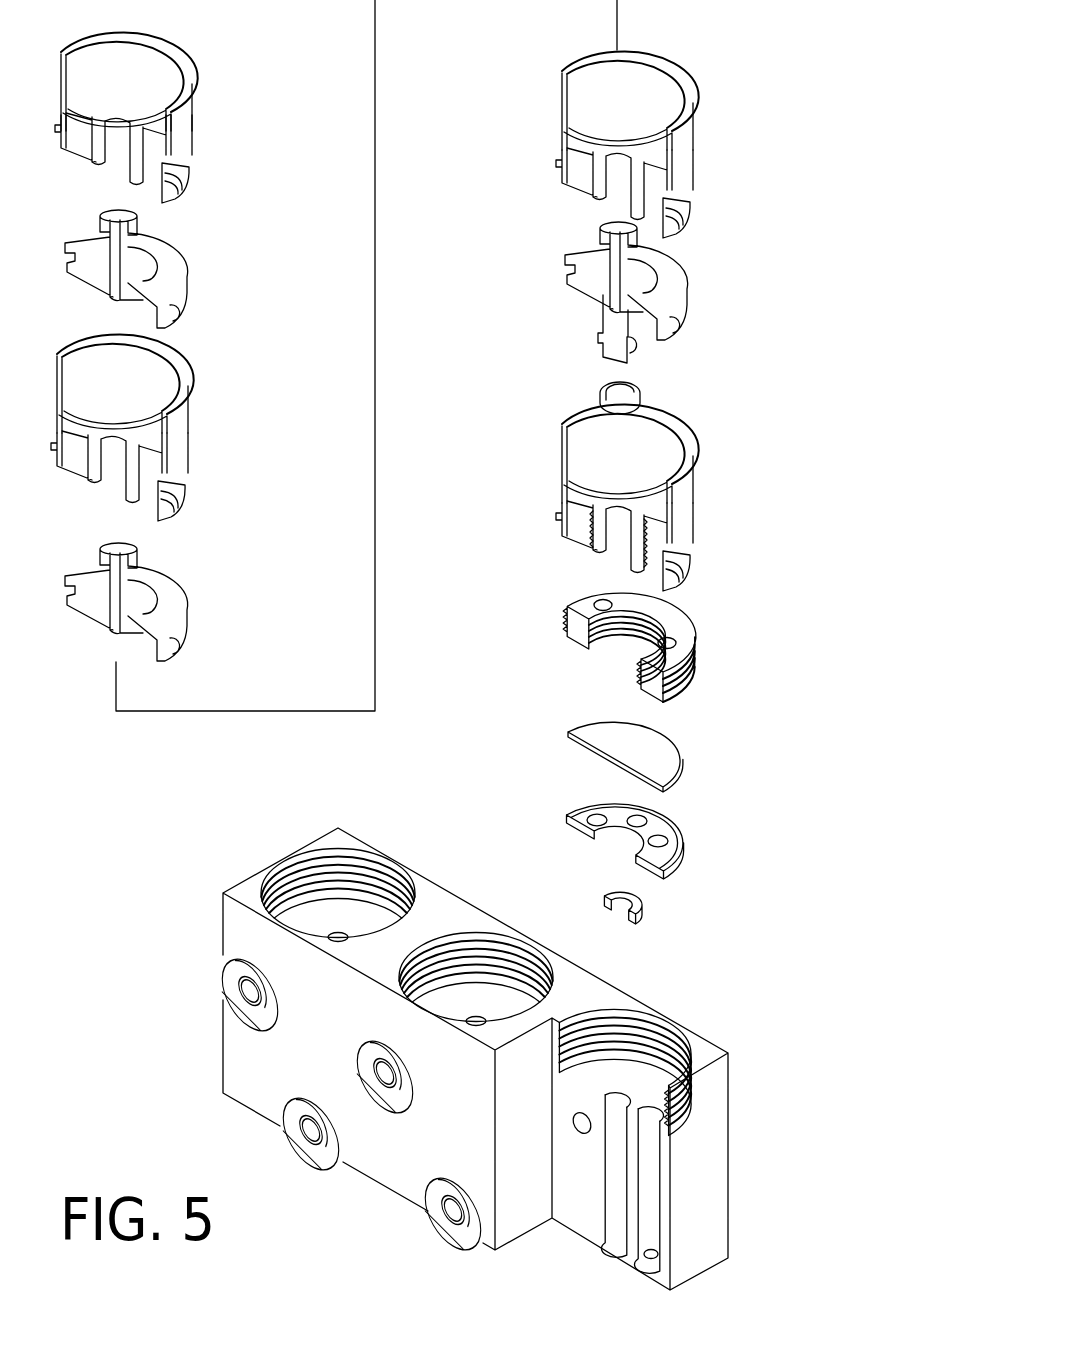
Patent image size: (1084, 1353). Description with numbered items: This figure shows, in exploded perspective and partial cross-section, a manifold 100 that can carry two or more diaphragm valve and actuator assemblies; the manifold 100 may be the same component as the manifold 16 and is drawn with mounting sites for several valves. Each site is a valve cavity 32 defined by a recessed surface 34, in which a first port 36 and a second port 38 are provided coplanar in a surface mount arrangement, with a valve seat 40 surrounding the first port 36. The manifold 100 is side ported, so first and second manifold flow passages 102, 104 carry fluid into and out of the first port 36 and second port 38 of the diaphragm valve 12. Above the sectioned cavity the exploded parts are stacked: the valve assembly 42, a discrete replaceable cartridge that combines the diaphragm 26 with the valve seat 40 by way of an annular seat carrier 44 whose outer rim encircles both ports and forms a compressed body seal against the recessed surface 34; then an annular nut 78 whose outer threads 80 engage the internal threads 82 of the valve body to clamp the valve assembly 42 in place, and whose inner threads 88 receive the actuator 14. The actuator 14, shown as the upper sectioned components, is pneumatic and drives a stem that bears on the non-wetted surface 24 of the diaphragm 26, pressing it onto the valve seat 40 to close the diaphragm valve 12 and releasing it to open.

The diaphragm valve 12 is at (830, 637).
The actuator 14 is at (725, 3).
The manifold 16 is at (730, 1200).
The non-wetted surface 24 is at (603, 740).
The diaphragm 26 is at (570, 717).
The valve cavity 32 is at (332, 920).
The recessed surface 34 is at (623, 1113).
The first port 36 is at (620, 1102).
The second port 38 is at (658, 1113).
The valve seat 40 is at (595, 888).
The valve assembly 42 is at (700, 722).
The seat carrier 44 is at (562, 803).
The nut 78 is at (667, 618).
The outer threads 80 is at (692, 653).
The internal threads 82 is at (663, 1030).
The inner threads 88 is at (598, 627).
The manifold 100 is at (153, 1025).
The first manifold flow passage 102 is at (617, 1217).
The second manifold flow passage 104 is at (652, 1228).